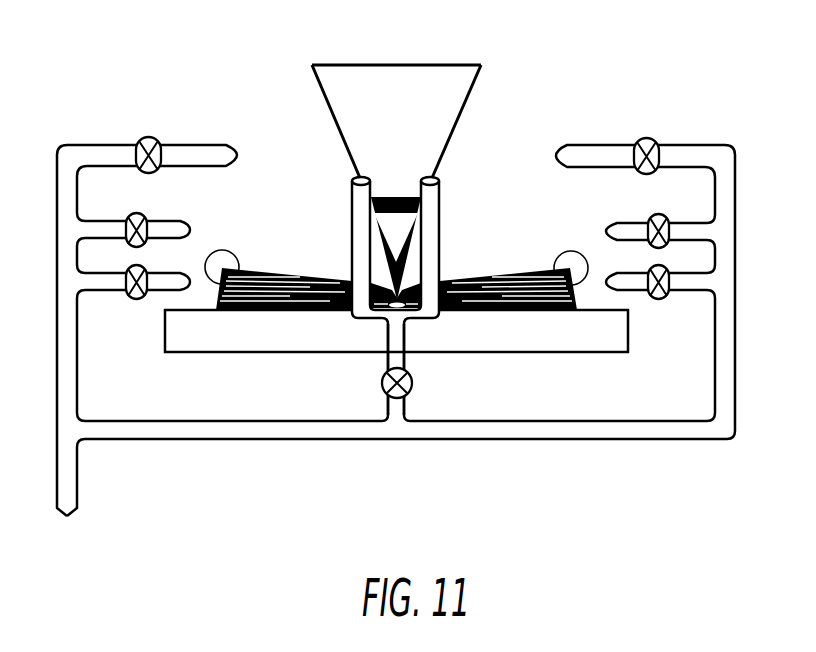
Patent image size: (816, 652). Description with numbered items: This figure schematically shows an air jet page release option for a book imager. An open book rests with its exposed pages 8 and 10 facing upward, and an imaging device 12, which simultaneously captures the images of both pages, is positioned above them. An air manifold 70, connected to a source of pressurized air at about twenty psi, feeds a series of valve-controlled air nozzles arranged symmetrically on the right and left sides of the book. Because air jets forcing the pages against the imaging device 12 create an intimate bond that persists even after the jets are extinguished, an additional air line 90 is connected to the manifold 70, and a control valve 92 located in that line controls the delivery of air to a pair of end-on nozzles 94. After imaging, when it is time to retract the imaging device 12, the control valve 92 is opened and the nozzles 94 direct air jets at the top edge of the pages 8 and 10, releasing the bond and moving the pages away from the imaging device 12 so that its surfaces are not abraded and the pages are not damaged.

The exposed page 8 is at (450, 150).
The exposed page 10 is at (342, 152).
The imaging device 12 is at (396, 97).
The air manifold 70 is at (168, 430).
The air line 90 is at (407, 409).
The control valve 92 is at (383, 382).
The end-on nozzles 94 is at (359, 178).